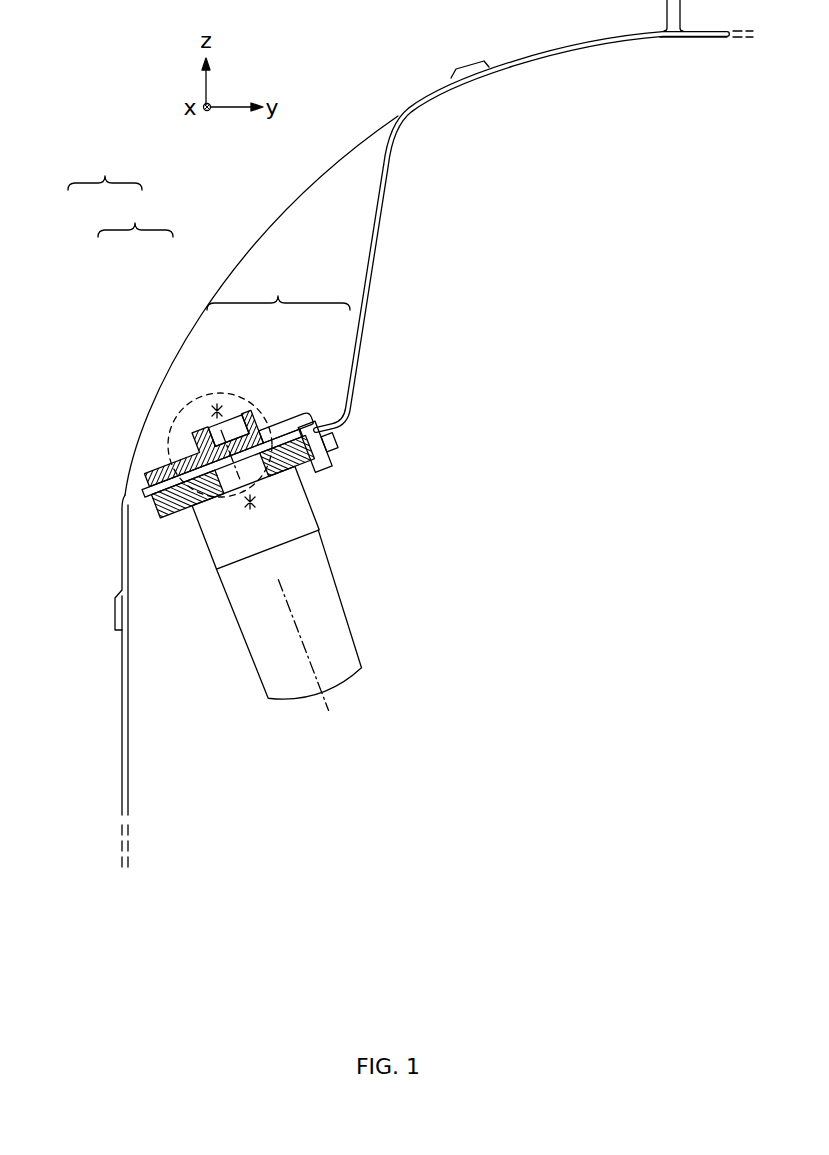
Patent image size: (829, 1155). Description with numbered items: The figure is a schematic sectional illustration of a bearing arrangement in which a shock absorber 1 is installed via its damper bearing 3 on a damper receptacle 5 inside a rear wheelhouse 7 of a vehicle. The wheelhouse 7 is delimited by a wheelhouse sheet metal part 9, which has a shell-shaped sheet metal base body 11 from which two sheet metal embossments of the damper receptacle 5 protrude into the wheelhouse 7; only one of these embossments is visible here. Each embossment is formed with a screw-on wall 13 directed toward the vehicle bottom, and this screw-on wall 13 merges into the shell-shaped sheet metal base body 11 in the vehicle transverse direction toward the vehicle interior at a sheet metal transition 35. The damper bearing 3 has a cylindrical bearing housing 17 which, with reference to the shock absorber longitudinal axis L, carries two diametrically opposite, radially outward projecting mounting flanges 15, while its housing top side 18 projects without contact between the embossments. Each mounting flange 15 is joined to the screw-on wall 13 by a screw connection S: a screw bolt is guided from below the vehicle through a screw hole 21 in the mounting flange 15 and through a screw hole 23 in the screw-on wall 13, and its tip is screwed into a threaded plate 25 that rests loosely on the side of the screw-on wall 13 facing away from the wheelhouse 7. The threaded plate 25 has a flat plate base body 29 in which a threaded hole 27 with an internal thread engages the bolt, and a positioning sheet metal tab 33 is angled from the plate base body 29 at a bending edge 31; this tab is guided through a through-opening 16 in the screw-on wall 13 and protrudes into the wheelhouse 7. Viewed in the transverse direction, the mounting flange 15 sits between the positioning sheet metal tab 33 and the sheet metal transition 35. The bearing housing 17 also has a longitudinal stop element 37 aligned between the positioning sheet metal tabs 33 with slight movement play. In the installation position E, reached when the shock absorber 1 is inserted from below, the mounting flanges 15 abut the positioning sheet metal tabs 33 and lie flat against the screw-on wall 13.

The shock absorber 1 is at (348, 630).
The damper bearing 3 is at (205, 545).
The damper receptacle 5 is at (135, 215).
The rear wheelhouse 7 is at (535, 284).
The wheelhouse sheet metal part 9 is at (105, 169).
The shell-shaped sheet metal base body 11 is at (119, 666).
The screw-on wall 13 is at (140, 495).
The mounting flange 15 is at (160, 517).
The through-opening 16 is at (325, 427).
The bearing housing 17 is at (246, 547).
The housing top side 18 is at (190, 402).
The screw hole 21 is at (271, 494).
The screw hole 23 is at (248, 476).
The threaded plate 25 is at (278, 286).
The threaded hole 27 is at (245, 417).
The plate base body 29 is at (273, 437).
The bending edge 31 is at (305, 428).
The positioning sheet metal tab 33 is at (320, 425).
The sheet metal transition 35 is at (130, 500).
The longitudinal stop element 37 is at (328, 445).
The installation position E is at (360, 387).
The screw connection S is at (256, 517).
The shock absorber longitudinal axis L is at (325, 710).